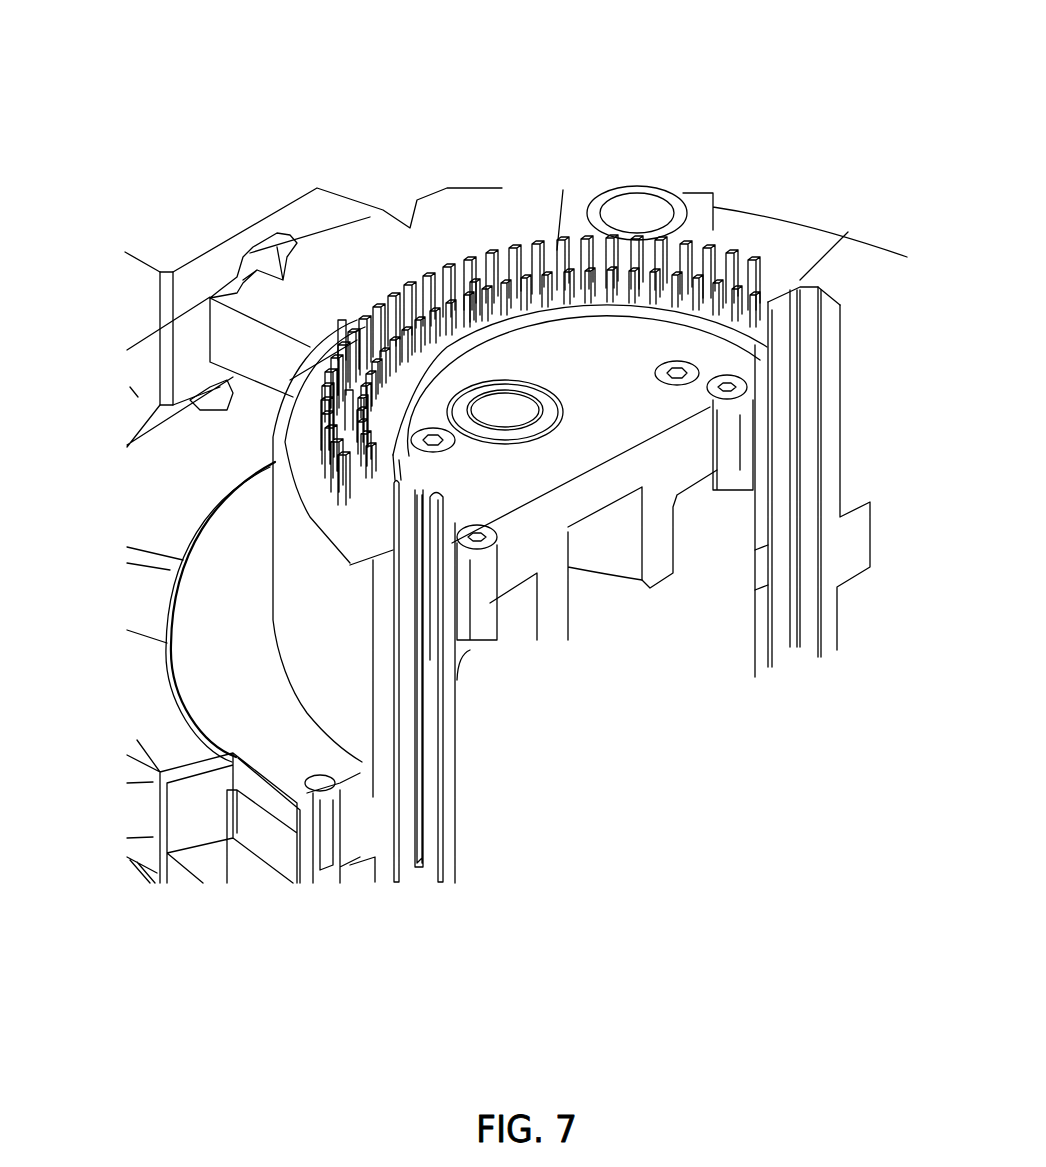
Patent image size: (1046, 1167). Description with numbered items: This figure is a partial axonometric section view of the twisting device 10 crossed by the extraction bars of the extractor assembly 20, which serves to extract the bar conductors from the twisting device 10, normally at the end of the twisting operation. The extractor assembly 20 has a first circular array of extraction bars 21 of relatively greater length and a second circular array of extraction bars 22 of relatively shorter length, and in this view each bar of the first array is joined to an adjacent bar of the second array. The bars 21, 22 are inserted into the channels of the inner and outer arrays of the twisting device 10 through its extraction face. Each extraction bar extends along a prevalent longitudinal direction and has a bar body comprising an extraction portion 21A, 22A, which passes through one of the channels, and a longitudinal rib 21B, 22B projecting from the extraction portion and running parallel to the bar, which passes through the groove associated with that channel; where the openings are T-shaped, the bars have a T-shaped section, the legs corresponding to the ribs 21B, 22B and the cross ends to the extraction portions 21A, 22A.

The twisting device 10 is at (358, 280).
The extractor assembly 20 is at (721, 248).
The extraction bar 21 is at (283, 263).
The extraction portion 21A is at (433, 290).
The longitudinal rib 21B is at (450, 264).
The extraction bar 22 is at (327, 365).
The extraction portion 22A is at (375, 522).
The longitudinal rib 22B is at (368, 548).